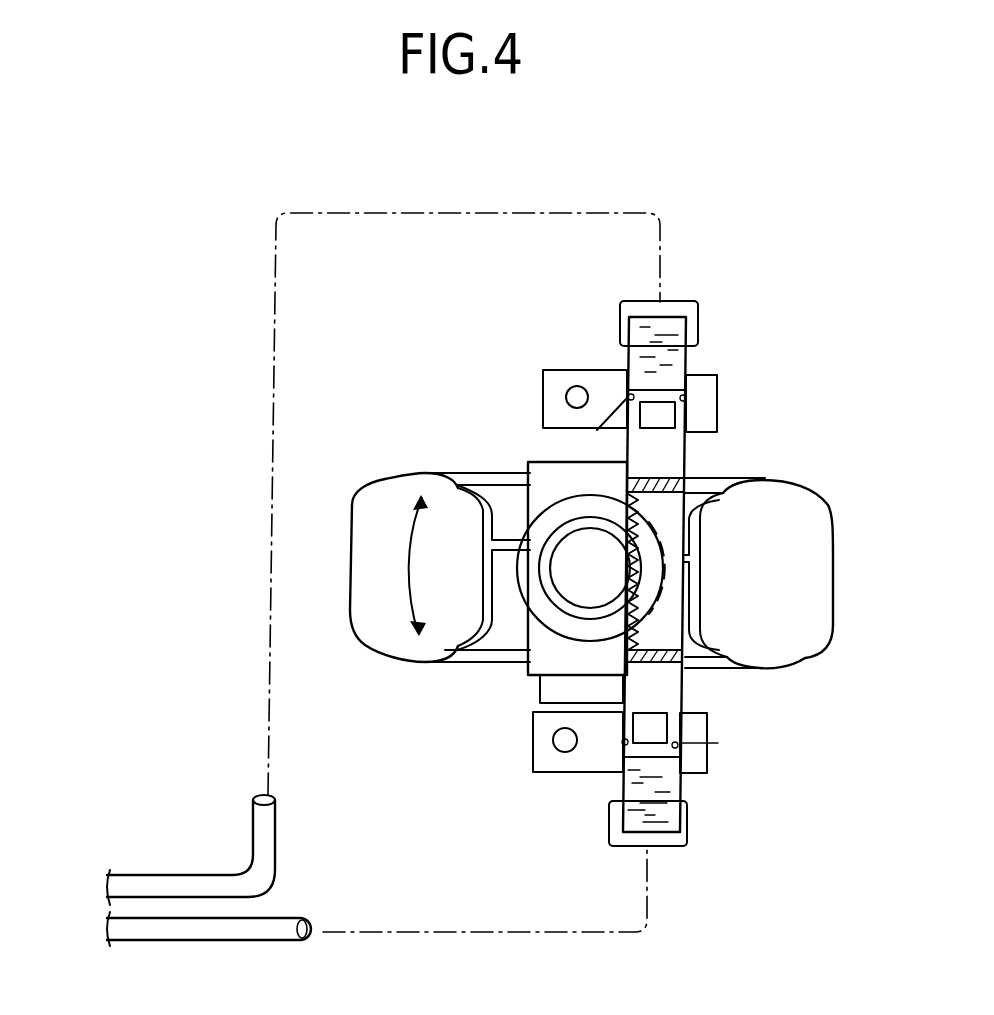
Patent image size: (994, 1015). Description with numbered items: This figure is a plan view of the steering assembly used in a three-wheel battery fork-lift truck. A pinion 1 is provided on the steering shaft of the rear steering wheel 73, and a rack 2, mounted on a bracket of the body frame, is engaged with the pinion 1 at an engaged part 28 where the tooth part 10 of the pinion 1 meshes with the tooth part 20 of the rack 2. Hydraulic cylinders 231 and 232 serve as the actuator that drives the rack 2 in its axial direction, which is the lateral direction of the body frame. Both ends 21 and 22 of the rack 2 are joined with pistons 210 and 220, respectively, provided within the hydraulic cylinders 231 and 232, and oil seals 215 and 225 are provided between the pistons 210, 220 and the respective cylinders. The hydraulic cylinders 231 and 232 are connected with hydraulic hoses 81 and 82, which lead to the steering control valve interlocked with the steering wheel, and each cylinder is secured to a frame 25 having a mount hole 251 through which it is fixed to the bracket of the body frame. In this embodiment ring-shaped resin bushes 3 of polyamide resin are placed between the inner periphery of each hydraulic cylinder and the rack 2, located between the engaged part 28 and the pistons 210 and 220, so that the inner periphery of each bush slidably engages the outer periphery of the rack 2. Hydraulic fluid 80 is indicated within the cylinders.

The pinion 1 is at (572, 583).
The rack 2 is at (673, 450).
The resin bush 3 is at (627, 457).
The tooth part 10 is at (568, 618).
The tooth part 20 is at (660, 682).
The end 21 is at (660, 413).
The end 22 is at (682, 775).
The frame 25 is at (552, 380).
The engaged part 28 is at (640, 565).
The rear steering wheel 73 is at (383, 545).
The fluid 80 is at (663, 337).
The hydraulic hose 81 is at (262, 817).
The hydraulic hose 82 is at (402, 930).
The piston 210 is at (653, 400).
The oil seal 215 is at (603, 424).
The piston 220 is at (645, 752).
The oil seal 225 is at (707, 744).
The hydraulic cylinder 231 is at (622, 350).
The hydraulic cylinder 232 is at (615, 810).
The mount hole 251 is at (577, 392).